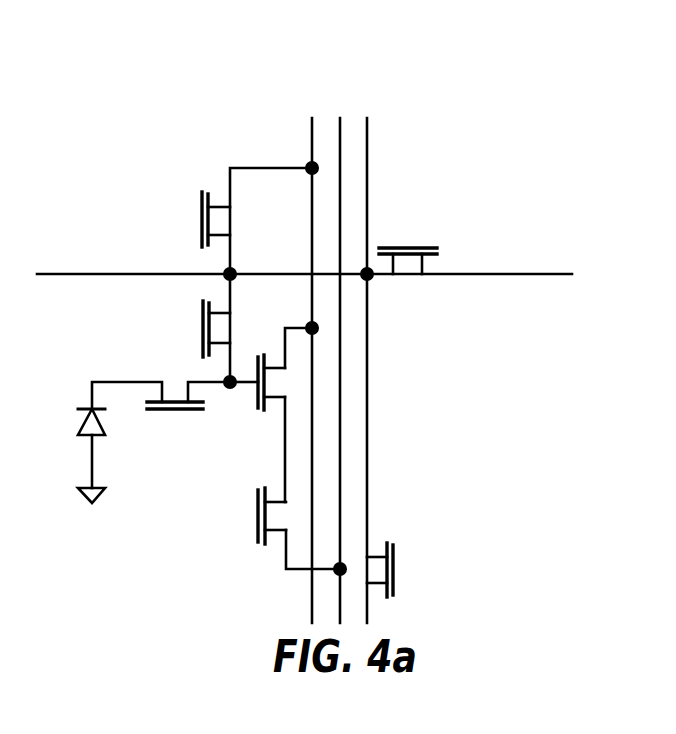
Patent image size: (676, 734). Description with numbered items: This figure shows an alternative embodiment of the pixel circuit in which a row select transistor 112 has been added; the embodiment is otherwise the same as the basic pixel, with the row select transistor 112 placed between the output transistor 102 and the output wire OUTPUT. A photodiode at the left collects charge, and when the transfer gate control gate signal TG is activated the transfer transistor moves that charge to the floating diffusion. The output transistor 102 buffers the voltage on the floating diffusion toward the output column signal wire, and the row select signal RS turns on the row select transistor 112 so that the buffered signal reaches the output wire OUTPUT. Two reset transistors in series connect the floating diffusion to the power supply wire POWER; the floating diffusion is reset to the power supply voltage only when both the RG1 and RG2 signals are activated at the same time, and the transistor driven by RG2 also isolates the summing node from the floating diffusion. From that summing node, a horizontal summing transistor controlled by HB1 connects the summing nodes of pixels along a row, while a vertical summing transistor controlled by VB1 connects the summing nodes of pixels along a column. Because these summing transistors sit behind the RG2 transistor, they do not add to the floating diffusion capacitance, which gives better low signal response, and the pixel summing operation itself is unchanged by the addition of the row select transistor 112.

The output transistor 102 is at (258, 406).
The row select transistor 112 is at (256, 537).
The RG1 signal RG1 is at (202, 220).
The RG2 signal RG2 is at (203, 328).
The horizontal summing transistor gate signal HB1 is at (408, 248).
The transfer gate control gate signal TG is at (175, 409).
The row select signal RS is at (258, 517).
The vertical summing transistor gate signal VB1 is at (393, 570).
The power supply wire POWER is at (308, 386).
The output wire OUTPUT is at (338, 382).